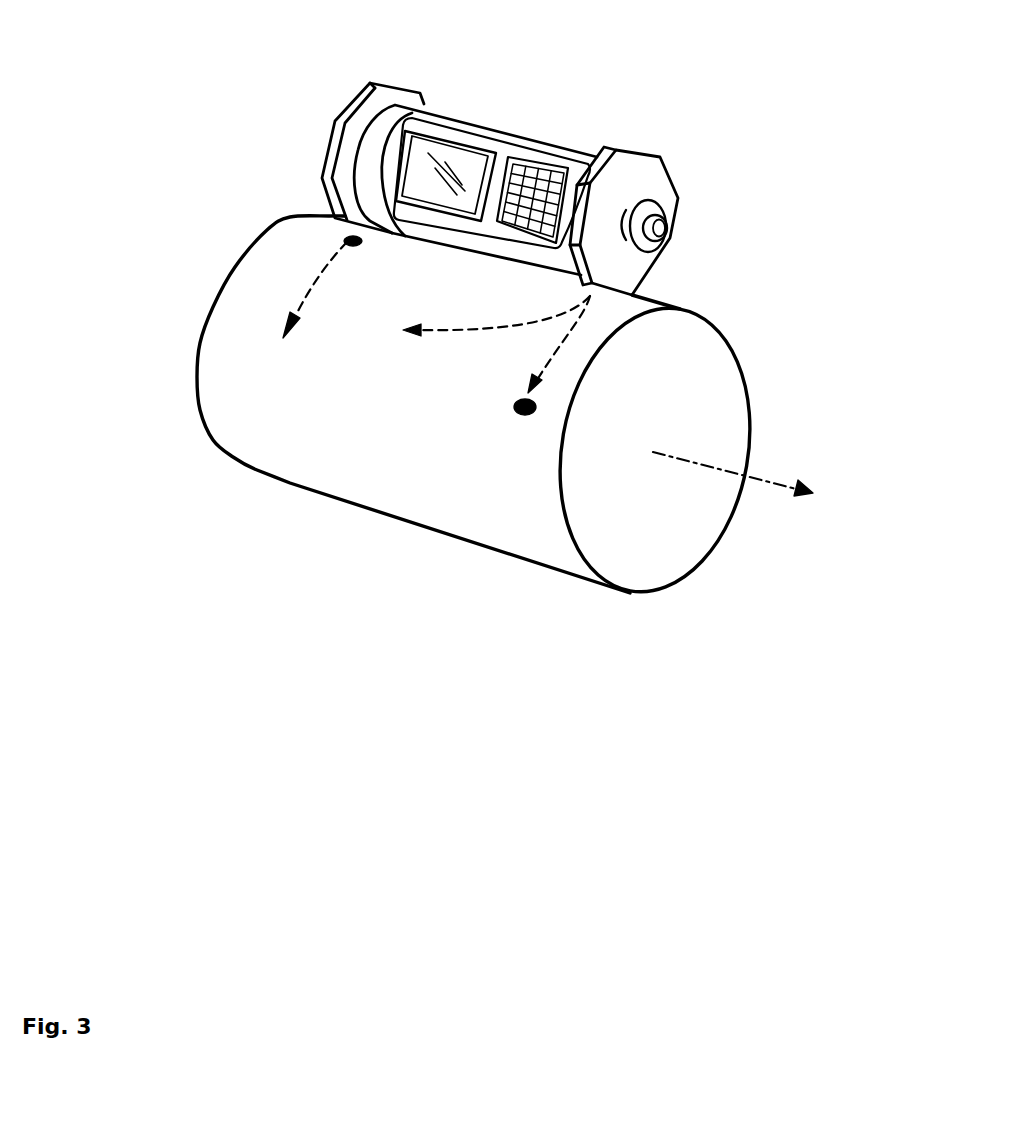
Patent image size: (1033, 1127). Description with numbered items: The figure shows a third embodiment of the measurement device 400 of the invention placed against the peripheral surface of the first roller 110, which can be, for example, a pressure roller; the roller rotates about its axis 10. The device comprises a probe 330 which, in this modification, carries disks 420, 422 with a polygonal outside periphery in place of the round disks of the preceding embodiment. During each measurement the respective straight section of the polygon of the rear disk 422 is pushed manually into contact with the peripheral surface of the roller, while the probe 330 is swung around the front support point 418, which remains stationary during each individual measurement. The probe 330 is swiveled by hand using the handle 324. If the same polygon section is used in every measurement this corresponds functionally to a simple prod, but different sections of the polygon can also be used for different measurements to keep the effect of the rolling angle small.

The axis of rotation / direction arrow 10 is at (768, 475).
The first roller 110 is at (205, 315).
The handle 324 is at (665, 233).
The probe 330 is at (466, 116).
The portable measuring device 400 is at (502, 155).
The front support point 418 is at (348, 236).
The disk with polygonal outside periphery 420 is at (322, 157).
The rear disk with polygonal outside periphery 422 is at (621, 142).